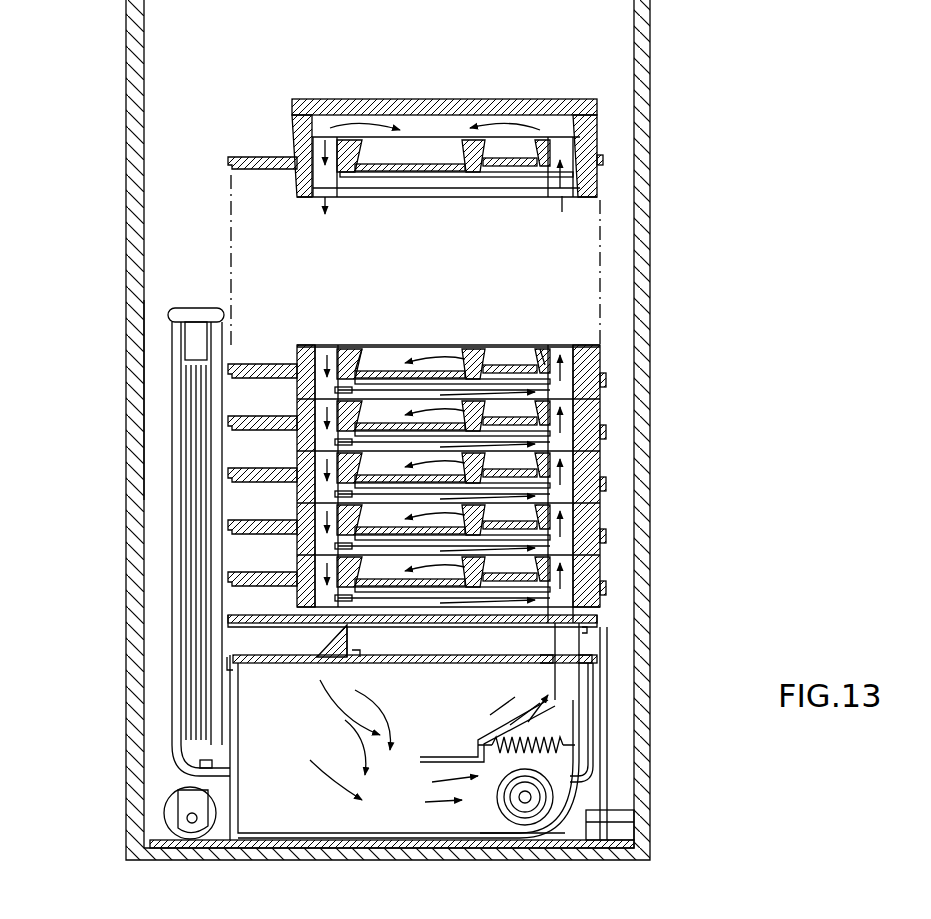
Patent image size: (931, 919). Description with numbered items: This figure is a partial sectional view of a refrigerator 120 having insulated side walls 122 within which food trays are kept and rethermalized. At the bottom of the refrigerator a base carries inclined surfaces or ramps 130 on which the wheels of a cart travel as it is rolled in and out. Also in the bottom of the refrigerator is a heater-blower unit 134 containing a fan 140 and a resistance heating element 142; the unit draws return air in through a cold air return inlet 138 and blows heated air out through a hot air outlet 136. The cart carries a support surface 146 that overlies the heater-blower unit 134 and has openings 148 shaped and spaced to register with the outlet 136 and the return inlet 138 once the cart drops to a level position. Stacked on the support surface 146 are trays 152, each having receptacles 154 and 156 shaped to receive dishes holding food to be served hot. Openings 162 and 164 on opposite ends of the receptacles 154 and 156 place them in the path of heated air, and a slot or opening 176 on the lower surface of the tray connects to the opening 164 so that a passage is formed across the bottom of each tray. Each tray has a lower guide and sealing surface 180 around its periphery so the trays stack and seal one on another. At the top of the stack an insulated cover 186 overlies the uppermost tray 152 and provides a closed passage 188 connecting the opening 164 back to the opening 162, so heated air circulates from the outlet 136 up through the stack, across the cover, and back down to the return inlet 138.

The refrigerator 120 is at (655, 215).
The insulated side walls 122 is at (128, 405).
The inclined surfaces or ramps 130 is at (625, 827).
The heater-blower unit 134 is at (272, 800).
The hot air outlets 136 is at (600, 650).
The cold air return inlets 138 is at (330, 663).
The fan 140 is at (523, 812).
The resistance heating element 142 is at (570, 742).
The support surface 146 is at (605, 620).
The openings 148 is at (598, 612).
The tray 152 is at (446, 345).
The receptacle 154 is at (508, 350).
The receptacle 156 is at (388, 355).
The opening 162 is at (327, 345).
The opening 164 is at (560, 345).
The slot or opening 176 is at (578, 440).
The lower guide and sealing surface 180 is at (300, 610).
The insulated cover 186 is at (595, 100).
The closed passage 188 is at (472, 105).